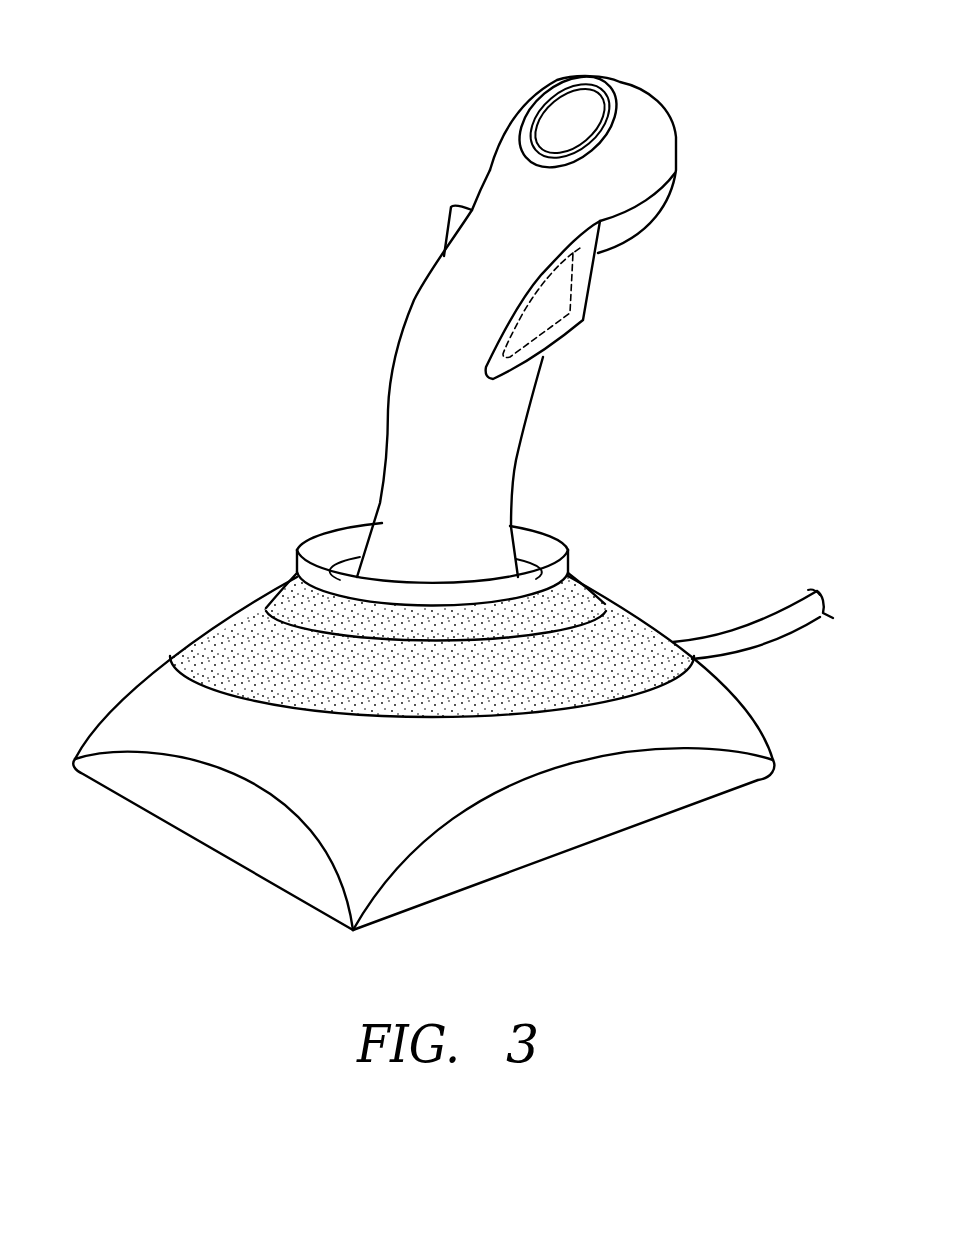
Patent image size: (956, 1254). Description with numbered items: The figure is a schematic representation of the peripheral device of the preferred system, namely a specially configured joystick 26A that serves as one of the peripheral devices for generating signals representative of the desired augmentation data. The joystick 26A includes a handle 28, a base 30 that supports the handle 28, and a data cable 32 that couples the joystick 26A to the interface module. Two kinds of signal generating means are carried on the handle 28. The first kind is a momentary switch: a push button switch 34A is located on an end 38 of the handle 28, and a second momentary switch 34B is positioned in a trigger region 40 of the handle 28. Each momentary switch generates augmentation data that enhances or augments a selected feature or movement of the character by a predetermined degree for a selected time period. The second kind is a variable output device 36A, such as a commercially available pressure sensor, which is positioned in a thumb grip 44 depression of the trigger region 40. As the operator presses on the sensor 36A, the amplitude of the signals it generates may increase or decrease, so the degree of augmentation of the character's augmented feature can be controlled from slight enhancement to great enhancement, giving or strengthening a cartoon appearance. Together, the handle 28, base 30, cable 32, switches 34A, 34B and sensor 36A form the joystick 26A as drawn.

The joystick 26A is at (432, 96).
The handle 28 is at (387, 455).
The base 30 is at (153, 697).
The data cable 32 is at (728, 643).
The push button switch 34A is at (565, 112).
The second momentary switch 34B is at (458, 223).
The variable output device 36A is at (538, 315).
The end of the handle 38 is at (615, 104).
The trigger region 40 is at (450, 317).
The thumb grip 44 is at (582, 246).